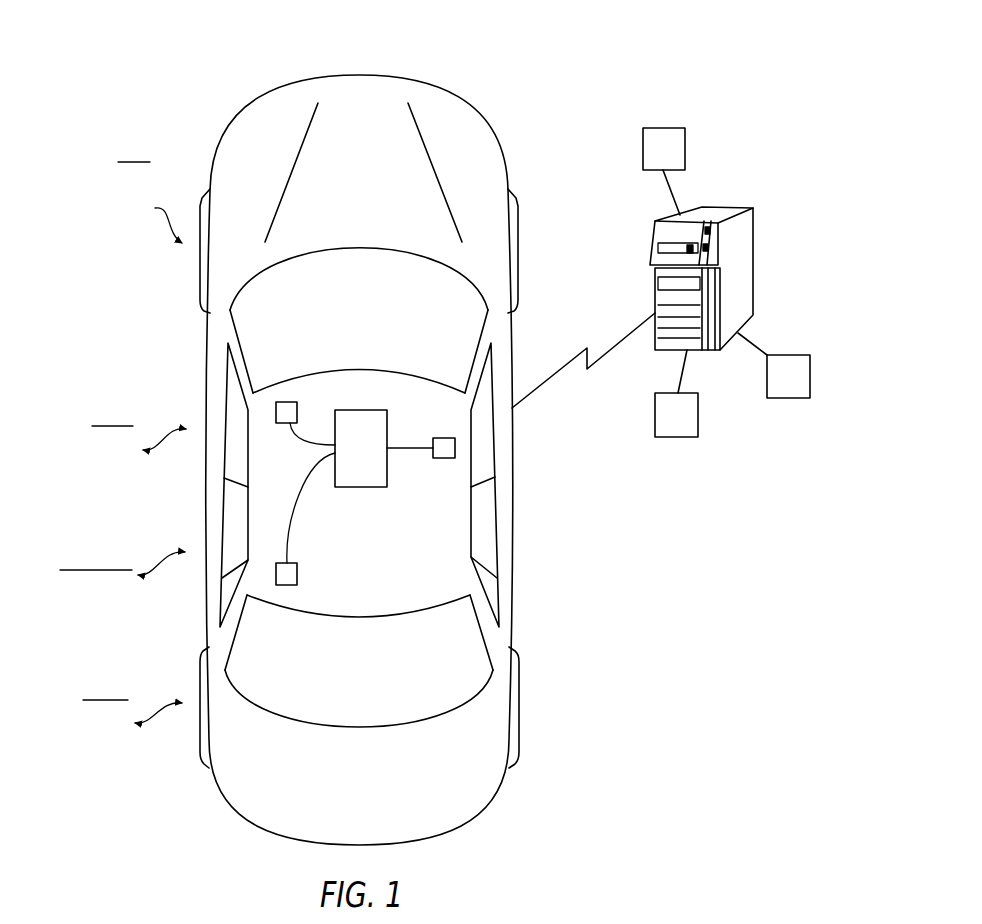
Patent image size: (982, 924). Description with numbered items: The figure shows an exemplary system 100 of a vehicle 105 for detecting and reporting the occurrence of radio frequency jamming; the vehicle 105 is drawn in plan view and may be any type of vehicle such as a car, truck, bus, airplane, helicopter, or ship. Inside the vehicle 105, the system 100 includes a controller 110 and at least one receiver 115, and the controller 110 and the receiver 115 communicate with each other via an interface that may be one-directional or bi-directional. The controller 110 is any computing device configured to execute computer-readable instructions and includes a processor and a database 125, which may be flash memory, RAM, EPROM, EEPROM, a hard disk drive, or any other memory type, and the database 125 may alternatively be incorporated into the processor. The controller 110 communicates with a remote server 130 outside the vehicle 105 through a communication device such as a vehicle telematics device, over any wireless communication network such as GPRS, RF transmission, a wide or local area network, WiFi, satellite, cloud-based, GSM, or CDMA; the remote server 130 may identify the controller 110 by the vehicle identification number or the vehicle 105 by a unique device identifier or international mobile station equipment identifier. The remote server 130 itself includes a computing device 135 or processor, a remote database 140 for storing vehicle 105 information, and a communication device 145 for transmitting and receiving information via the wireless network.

The system 100 is at (217, 78).
The vehicle 105 is at (505, 136).
The controller 110 is at (365, 410).
The receiver 115 is at (287, 423).
The database 125 is at (443, 458).
The remote server 130 is at (735, 207).
The computing device 135 is at (675, 128).
The remote database 140 is at (788, 355).
The communication device 145 is at (672, 437).